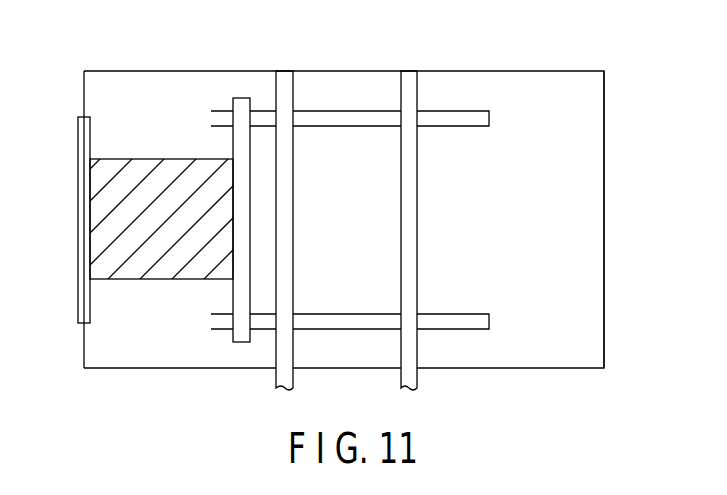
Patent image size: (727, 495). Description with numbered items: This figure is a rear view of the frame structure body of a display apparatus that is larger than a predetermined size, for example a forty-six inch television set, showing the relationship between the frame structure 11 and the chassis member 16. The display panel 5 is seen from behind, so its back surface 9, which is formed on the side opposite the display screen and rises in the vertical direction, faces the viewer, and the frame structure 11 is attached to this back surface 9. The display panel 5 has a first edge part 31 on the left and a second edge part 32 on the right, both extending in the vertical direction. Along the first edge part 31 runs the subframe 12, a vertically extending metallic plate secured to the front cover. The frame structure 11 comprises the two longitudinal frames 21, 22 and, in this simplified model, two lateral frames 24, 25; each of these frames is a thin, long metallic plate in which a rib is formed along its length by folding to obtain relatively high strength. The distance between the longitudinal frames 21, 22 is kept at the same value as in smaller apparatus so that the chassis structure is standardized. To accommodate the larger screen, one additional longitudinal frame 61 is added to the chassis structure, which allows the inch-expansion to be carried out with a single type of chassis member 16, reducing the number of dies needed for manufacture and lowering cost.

The display panel 5 is at (522, 85).
The first edge part 31 is at (84, 88).
The second edge part 32 is at (598, 182).
The subframe 12 is at (78, 200).
The chassis member 16 is at (145, 173).
The longitudinal frame 61 is at (242, 108).
The longitudinal frame 21 is at (284, 85).
The longitudinal frame 22 is at (409, 83).
The lateral frame 24 is at (345, 115).
The lateral frame 25 is at (337, 323).
The back surface 9 is at (513, 213).
The frame structure 11 is at (428, 265).